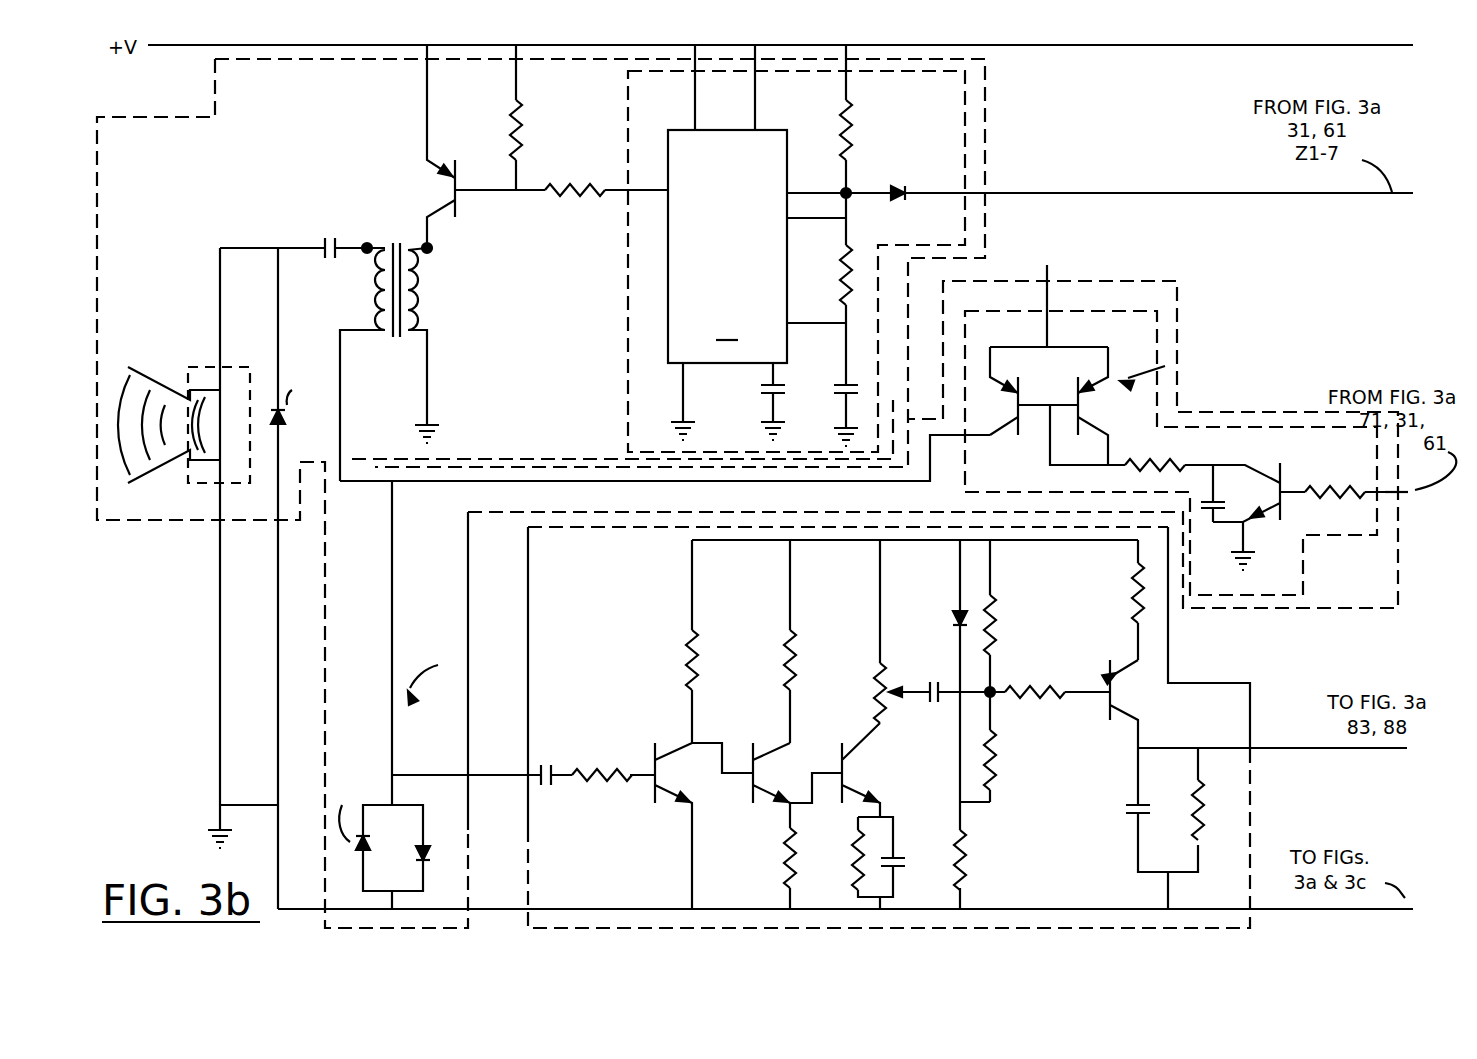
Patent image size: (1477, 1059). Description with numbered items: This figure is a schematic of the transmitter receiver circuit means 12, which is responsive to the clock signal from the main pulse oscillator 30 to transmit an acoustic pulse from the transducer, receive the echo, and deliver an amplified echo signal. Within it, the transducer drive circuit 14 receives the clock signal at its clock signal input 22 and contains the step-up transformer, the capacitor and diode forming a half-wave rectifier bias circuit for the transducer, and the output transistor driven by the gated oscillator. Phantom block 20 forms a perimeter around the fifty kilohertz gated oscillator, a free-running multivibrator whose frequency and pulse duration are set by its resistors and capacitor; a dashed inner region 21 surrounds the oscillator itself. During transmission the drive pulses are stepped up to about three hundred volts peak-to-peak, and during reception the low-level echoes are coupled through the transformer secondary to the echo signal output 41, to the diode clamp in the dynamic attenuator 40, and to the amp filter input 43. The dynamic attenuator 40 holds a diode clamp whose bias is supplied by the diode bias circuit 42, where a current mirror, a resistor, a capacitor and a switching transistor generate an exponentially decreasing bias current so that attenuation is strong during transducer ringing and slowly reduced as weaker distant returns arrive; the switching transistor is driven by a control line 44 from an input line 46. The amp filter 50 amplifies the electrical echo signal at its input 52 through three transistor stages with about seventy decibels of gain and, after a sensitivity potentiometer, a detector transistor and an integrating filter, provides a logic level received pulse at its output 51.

The transmitter receiver circuit means 12 is at (605, 195).
The transducer drive circuit 14 is at (507, 378).
The gated oscillator phantom block 20 is at (904, 112).
The gated oscillator Z4 section 21 is at (636, 183).
The clock signal input 22 is at (970, 190).
The main pulse oscillator 30 is at (414, 146).
The dynamic attenuator circuit 40 is at (418, 570).
The echo signal output 41 is at (338, 458).
The diode bias circuit 42 is at (980, 338).
The amp filter input 43 is at (470, 774).
The bias control line 44 is at (1372, 497).
The bias control input line 46 is at (1390, 503).
The amp filter 50 is at (581, 602).
The amp filter output 51 is at (1262, 732).
The amp filter input 52 is at (526, 778).